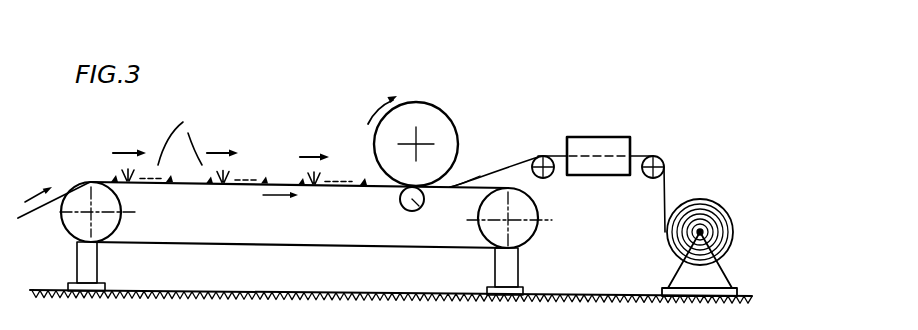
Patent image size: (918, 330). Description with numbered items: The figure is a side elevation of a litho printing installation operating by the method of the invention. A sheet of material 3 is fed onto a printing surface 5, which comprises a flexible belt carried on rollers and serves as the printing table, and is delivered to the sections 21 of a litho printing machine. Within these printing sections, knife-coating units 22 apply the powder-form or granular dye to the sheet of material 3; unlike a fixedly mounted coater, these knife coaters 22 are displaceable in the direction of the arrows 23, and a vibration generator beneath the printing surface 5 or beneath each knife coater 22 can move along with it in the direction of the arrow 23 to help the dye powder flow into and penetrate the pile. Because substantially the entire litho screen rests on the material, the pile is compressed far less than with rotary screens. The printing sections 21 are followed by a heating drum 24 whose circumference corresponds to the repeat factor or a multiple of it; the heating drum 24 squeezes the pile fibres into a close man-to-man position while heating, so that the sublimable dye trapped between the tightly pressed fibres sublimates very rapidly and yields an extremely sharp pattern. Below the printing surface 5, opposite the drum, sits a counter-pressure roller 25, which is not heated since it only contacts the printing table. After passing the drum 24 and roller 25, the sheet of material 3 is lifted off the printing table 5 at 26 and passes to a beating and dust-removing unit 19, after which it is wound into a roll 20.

The sheet of material 3 is at (38, 207).
The printing surface 5 is at (152, 183).
The beating and dust-removing unit 19 is at (600, 147).
The roll 20 is at (718, 204).
The sections of a litho printing machine 21 is at (180, 130).
The knife-coating units 22 is at (122, 172).
The arrows 23 is at (127, 151).
The heating drum 24 is at (445, 127).
The counter-pressure roller 25 is at (419, 208).
The lift-off point 26 is at (496, 184).